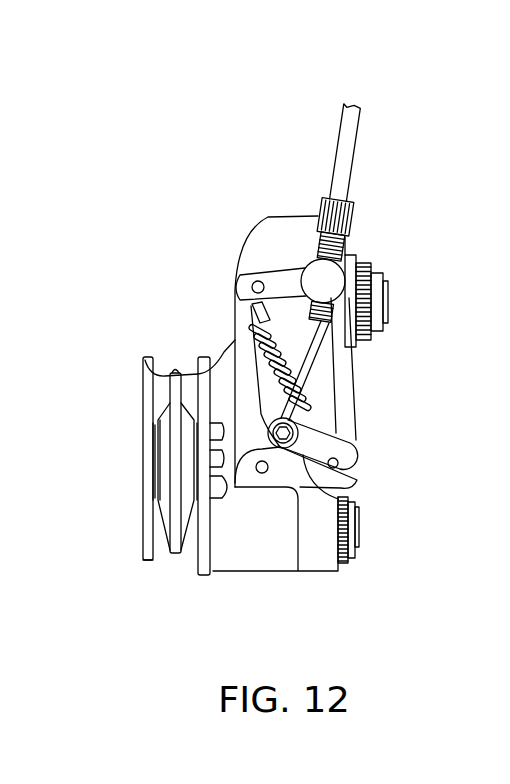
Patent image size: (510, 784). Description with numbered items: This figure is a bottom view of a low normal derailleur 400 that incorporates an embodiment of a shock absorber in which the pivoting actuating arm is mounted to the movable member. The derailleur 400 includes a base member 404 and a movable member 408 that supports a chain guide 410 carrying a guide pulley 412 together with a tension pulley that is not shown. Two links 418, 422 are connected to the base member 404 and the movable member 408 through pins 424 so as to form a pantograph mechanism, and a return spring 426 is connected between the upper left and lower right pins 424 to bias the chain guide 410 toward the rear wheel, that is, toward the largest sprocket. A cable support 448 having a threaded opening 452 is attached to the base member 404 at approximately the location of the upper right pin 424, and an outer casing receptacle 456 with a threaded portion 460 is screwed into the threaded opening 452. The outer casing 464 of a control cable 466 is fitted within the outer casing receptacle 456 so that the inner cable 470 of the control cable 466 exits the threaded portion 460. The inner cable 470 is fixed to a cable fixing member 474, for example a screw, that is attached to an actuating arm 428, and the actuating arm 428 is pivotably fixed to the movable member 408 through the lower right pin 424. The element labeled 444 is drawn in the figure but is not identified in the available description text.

The low normal derailleur 400 is at (110, 282).
The base member 404 is at (260, 218).
The movable member 408 is at (267, 573).
The chain guide 410 is at (143, 357).
The guide pulley 412 is at (173, 552).
The link 418 is at (250, 340).
The link 422 is at (345, 400).
The pins 424 is at (252, 286).
The return spring 426 is at (248, 342).
The actuating arm 428 is at (352, 530).
The pivot 444 is at (300, 433).
The cable support 448 is at (330, 283).
The threaded opening 452 is at (306, 258).
The outer casing receptacle 456 is at (350, 208).
The threaded portion 460 is at (350, 246).
The outer casing 464 is at (350, 160).
The control cable 466 is at (328, 93).
The inner cable 470 is at (308, 349).
The cable fixing member 474 is at (330, 446).